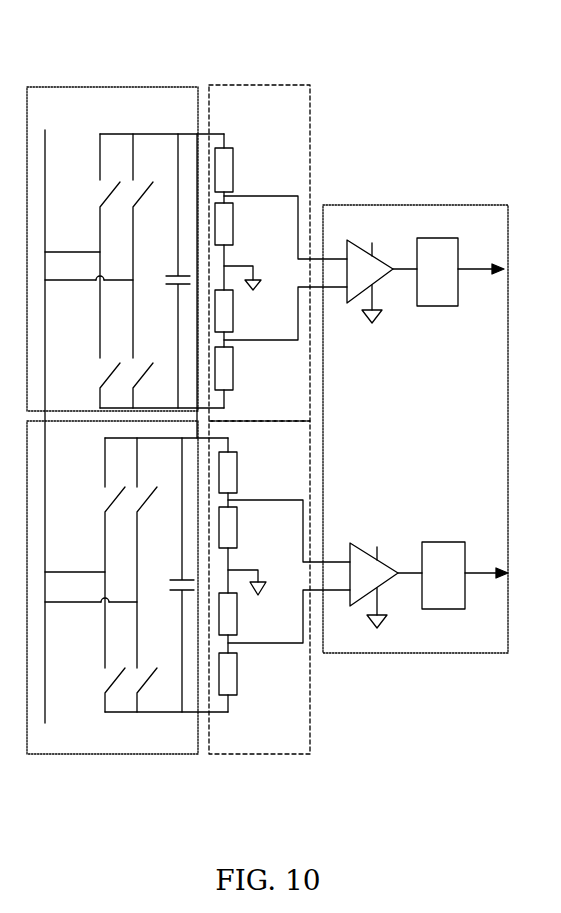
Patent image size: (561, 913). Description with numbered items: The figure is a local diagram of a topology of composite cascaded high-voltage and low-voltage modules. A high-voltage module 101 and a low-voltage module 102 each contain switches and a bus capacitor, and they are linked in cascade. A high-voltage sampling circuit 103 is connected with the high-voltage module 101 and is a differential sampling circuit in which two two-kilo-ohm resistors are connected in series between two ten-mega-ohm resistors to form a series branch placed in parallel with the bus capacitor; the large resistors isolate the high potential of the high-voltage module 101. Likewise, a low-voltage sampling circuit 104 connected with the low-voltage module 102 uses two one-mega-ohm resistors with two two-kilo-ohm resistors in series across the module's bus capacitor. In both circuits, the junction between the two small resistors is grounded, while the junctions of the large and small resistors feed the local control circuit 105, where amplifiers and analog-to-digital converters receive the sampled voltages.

The high-voltage module 101 is at (90, 756).
The low-voltage module 102 is at (108, 86).
The high-voltage sampling circuit 103 is at (257, 756).
The low-voltage sampling circuit 104 is at (247, 85).
The local control circuit 105 is at (355, 205).